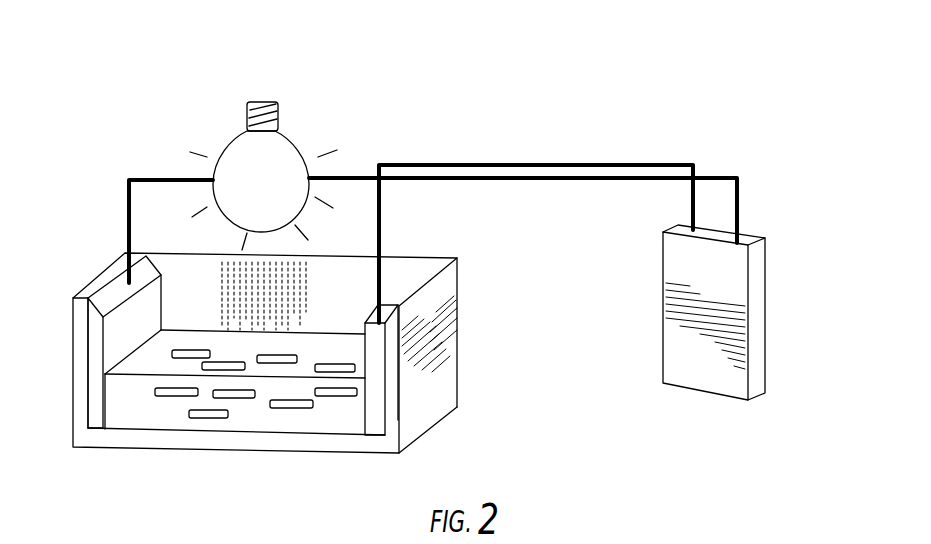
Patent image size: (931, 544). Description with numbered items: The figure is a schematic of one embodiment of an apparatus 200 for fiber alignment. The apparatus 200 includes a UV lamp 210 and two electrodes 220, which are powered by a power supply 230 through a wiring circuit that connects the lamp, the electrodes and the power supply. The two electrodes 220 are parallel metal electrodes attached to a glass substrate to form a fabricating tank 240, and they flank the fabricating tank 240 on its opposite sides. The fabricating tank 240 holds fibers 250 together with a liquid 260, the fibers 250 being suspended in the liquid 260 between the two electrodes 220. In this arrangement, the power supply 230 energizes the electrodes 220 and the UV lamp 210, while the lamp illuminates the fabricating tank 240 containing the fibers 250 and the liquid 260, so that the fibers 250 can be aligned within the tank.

The apparatus 200 is at (492, 92).
The UV lamp 210 is at (218, 138).
The electrodes 220 is at (358, 413).
The power supply 230 is at (753, 342).
The fabricating tank 240 is at (150, 412).
The fibers 250 is at (290, 370).
The liquid 260 is at (173, 379).